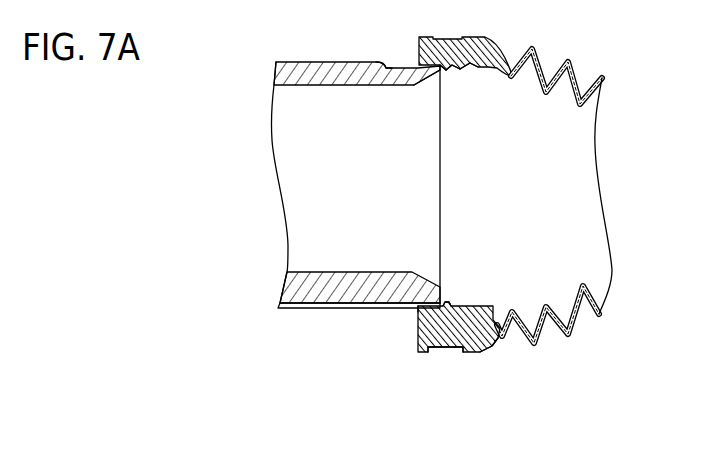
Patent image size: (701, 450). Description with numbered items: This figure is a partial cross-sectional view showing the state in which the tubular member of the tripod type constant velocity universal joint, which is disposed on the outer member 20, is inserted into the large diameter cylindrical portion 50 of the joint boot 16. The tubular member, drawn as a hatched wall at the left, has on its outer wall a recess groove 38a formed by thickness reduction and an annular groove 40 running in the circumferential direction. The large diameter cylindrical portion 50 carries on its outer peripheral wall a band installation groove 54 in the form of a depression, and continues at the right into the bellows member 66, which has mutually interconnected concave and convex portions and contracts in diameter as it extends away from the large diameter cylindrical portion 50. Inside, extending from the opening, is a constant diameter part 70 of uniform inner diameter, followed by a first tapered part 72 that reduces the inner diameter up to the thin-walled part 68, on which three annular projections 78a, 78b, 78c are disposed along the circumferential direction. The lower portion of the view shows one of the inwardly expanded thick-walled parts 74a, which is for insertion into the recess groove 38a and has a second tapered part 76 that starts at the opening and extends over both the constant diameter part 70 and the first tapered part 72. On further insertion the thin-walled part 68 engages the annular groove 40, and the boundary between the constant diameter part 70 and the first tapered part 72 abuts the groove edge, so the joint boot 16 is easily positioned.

The joint boot 16 is at (585, 206).
The outer member 20 is at (306, 62).
The recess groove 38a is at (300, 308).
The annular groove 40 is at (380, 66).
The large diameter cylindrical portion 50 is at (412, 355).
The band installation groove 54 is at (447, 352).
The bellows member 66 is at (566, 66).
The thin-walled part 68 is at (478, 352).
The constant diameter part 70 is at (418, 58).
The first tapered part 72 is at (420, 72).
The thick-walled part 74a is at (483, 303).
The second tapered part 76 is at (418, 315).
The annular projection 78a is at (441, 67).
The annular projection 78b is at (448, 69).
The annular projection 78c is at (458, 68).